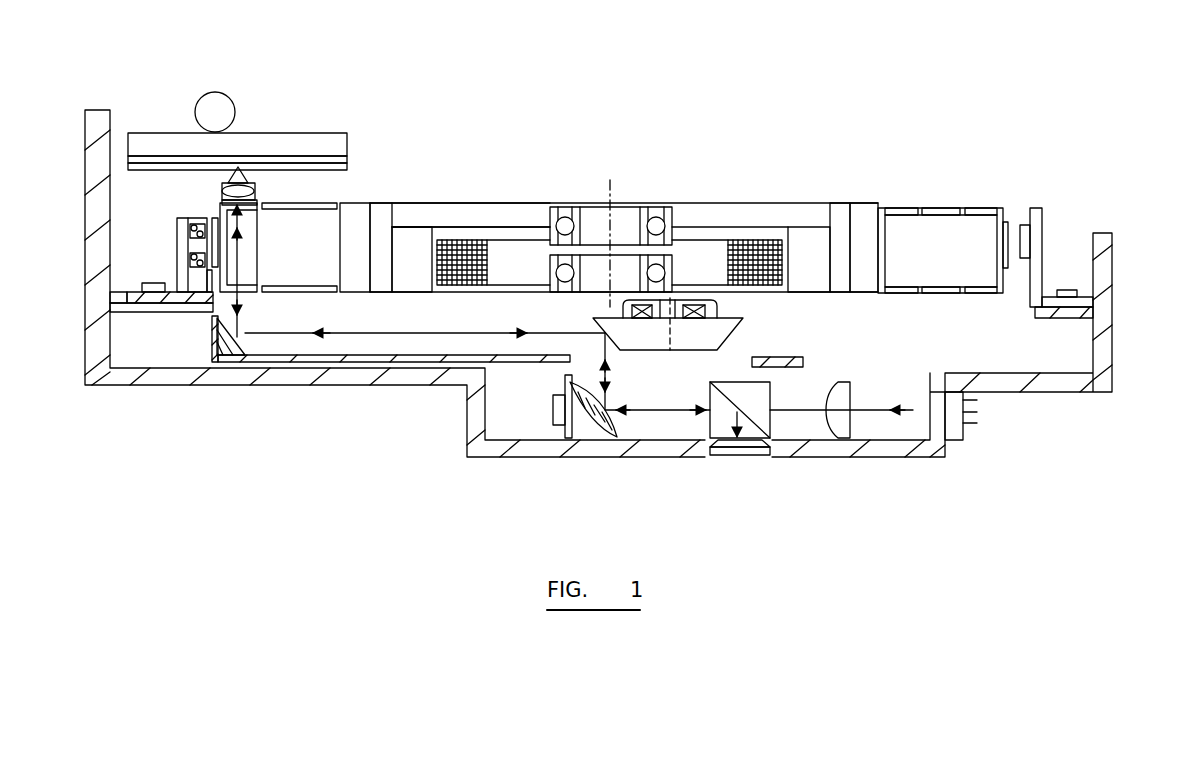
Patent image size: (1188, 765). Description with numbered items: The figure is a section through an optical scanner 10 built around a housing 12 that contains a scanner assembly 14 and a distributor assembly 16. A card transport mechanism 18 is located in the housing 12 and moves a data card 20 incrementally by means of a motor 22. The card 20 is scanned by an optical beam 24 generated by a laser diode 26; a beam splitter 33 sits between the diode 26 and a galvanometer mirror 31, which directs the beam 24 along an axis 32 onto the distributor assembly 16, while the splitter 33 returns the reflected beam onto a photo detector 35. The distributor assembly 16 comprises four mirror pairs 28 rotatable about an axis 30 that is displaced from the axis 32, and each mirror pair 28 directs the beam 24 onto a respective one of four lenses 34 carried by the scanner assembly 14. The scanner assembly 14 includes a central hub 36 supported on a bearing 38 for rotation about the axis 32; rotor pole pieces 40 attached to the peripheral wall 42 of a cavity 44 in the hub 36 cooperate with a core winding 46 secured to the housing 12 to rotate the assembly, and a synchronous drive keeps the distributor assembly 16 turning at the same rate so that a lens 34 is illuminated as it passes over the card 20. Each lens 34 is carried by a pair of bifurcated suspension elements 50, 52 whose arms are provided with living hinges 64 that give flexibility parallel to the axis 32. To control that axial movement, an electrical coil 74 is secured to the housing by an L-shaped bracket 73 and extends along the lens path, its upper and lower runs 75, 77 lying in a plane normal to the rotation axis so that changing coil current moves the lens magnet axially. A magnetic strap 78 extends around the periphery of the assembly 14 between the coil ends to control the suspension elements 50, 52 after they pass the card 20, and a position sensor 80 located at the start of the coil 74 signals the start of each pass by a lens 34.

The optical scanner 10 is at (1057, 433).
The housing 12 is at (1112, 328).
The scanner assembly 14 is at (383, 362).
The distributor assembly 16 is at (448, 203).
The card transport mechanism 18 is at (165, 135).
The data card 20 is at (295, 150).
The motor 22 is at (213, 100).
The optical beam 24 is at (855, 400).
The laser diode 26 is at (960, 420).
The mirror pairs 28 is at (243, 330).
The axis 30 is at (672, 355).
The galvanometer mirror 31 is at (580, 395).
The axis 32 is at (607, 185).
The beam splitter 33 is at (740, 395).
The lenses 34 is at (252, 193).
The photo detector 35 is at (740, 455).
The central hub 36 is at (752, 215).
The bearing 38 is at (638, 215).
The rotor pole pieces 40 is at (412, 292).
The peripheral wall 42 is at (392, 235).
The cavity 44 is at (514, 230).
The core winding 46 is at (487, 262).
The suspension element 50 is at (300, 209).
The suspension element 52 is at (297, 287).
The living hinges 64 is at (880, 210).
The L-shaped bracket 73 is at (160, 288).
The electrical coil 74 is at (178, 232).
The upper run 75 is at (192, 225).
The lower run 77 is at (190, 265).
The magnetic strap 78 is at (1036, 220).
The position sensor 80 is at (210, 292).